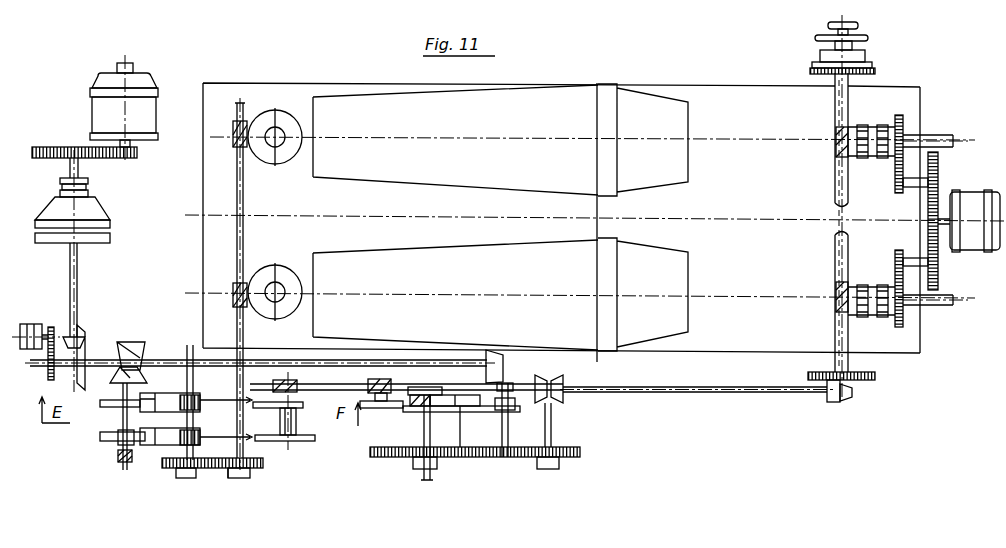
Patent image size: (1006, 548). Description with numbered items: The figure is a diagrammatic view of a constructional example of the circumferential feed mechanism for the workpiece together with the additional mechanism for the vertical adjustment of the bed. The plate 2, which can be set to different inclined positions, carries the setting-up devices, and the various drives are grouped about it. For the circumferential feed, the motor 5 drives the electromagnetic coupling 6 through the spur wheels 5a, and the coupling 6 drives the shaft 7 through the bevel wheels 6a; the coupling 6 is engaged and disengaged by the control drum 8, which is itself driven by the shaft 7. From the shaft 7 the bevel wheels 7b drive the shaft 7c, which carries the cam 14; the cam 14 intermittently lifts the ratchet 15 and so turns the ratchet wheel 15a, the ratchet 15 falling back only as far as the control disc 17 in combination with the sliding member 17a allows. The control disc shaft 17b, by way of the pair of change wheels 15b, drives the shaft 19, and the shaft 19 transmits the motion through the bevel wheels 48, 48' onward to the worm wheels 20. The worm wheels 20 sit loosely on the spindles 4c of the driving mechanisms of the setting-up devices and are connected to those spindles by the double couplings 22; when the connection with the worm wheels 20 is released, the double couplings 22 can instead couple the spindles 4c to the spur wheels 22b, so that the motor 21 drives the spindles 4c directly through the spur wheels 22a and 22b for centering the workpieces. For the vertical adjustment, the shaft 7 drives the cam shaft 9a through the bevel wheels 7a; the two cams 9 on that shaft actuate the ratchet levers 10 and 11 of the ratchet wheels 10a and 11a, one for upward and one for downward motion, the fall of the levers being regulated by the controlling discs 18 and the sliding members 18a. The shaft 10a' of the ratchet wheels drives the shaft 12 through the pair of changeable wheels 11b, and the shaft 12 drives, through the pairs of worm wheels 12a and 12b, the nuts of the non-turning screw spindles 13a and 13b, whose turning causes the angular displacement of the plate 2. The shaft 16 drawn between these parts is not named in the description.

The plate 2 is at (386, 213).
The spindles 4c is at (945, 140).
The motor 5 is at (107, 81).
The spur wheels 5a is at (102, 158).
The electromagnetic coupling 6 is at (52, 208).
The bevel wheels 6a is at (83, 338).
The shaft 7 is at (180, 358).
The bevel wheels 7a is at (147, 360).
The bevel wheels 7b is at (522, 365).
The shaft 7c is at (510, 433).
The control drum 8 is at (32, 325).
The cams 9 is at (120, 436).
The cam shaft 9a is at (122, 456).
The ratchet lever 10 is at (172, 395).
The ratchet wheel 10a is at (200, 400).
The shaft 10a' is at (216, 392).
The ratchet lever 11 is at (147, 445).
The ratchet wheel 11a is at (185, 446).
The pair of changeable wheels 11b is at (222, 478).
The shaft 12 is at (237, 248).
The pair of worm wheels 12a is at (233, 308).
The pair of worm wheels 12b is at (233, 136).
The non-turning screw spindle 13a is at (280, 282).
The non-turning screw spindle 13b is at (277, 130).
The cam 14 is at (516, 410).
The ratchet 15 is at (443, 412).
The ratchet wheel 15a is at (416, 408).
The pair of change wheels 15b is at (472, 459).
The shaft 16 is at (462, 388).
The control disc 17 is at (400, 423).
The sliding member 17a is at (398, 443).
The control disc shaft 17b is at (427, 472).
The controlling discs 18 is at (302, 428).
The sliding members 18a is at (236, 430).
The shaft 19 is at (705, 387).
The worm wheels 20 is at (836, 182).
The motor 21 is at (985, 221).
The double couplings 22 is at (888, 122).
The spur wheels 22a is at (938, 175).
The spur wheels 22b is at (899, 166).
The bevel wheel 48 is at (848, 407).
The bevel wheel 48' is at (864, 391).